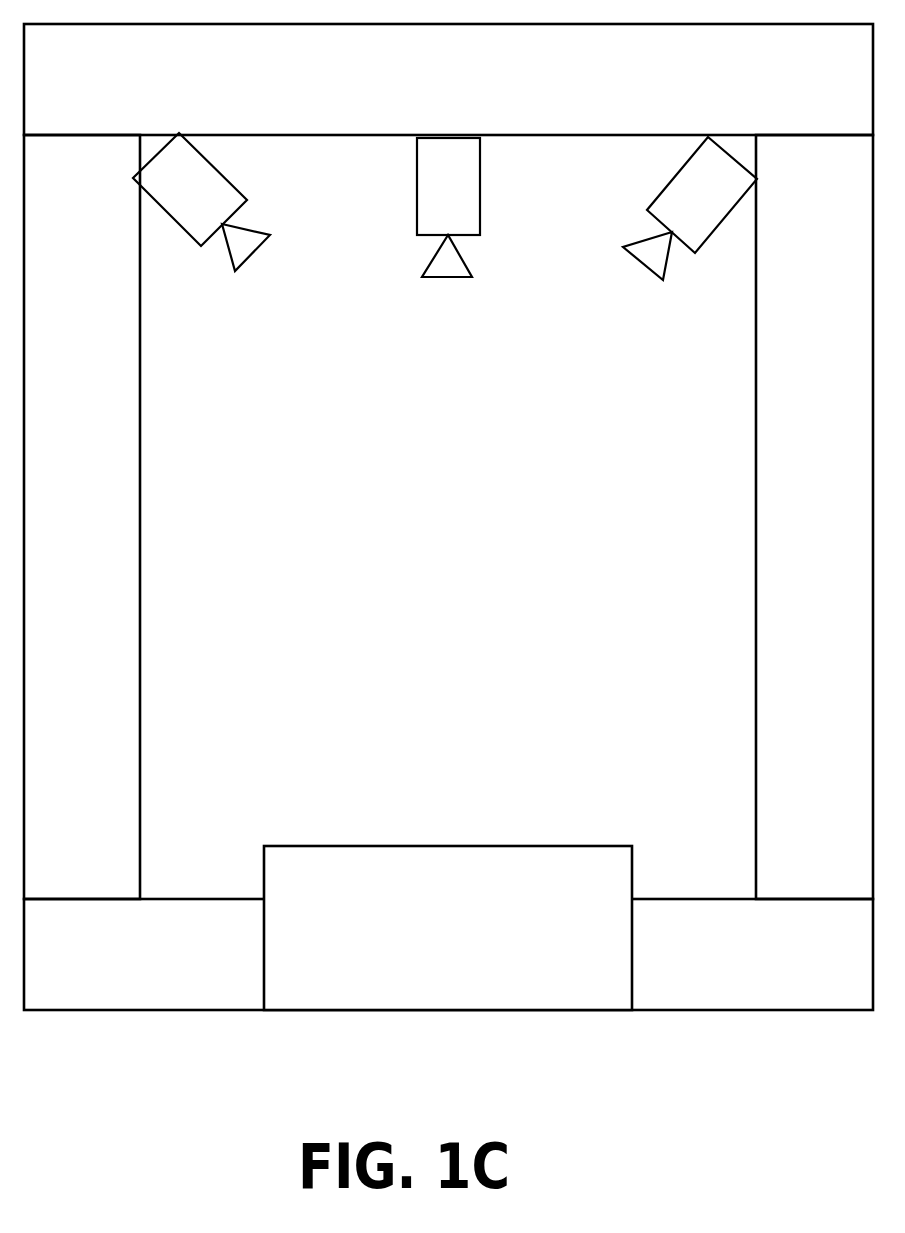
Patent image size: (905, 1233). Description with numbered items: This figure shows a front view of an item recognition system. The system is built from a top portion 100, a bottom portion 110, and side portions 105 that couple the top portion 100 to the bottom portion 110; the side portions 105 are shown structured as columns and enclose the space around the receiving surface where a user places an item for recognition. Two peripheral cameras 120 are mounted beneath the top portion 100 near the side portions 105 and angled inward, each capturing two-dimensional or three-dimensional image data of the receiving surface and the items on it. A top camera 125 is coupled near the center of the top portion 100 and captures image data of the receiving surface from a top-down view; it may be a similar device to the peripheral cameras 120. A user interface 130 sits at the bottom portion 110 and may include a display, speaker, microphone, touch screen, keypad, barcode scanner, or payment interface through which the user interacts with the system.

The top portion 100 is at (587, 90).
The side portions 105 is at (102, 651).
The bottom portion 110 is at (727, 965).
The peripheral cameras 120 is at (208, 286).
The top camera 125 is at (488, 294).
The user interface 130 is at (468, 948).